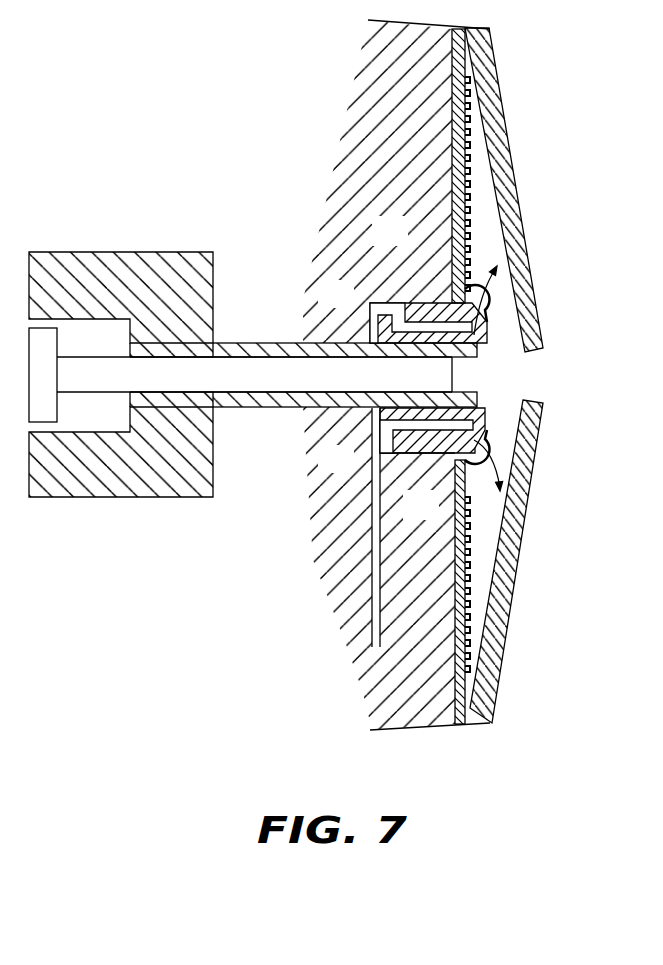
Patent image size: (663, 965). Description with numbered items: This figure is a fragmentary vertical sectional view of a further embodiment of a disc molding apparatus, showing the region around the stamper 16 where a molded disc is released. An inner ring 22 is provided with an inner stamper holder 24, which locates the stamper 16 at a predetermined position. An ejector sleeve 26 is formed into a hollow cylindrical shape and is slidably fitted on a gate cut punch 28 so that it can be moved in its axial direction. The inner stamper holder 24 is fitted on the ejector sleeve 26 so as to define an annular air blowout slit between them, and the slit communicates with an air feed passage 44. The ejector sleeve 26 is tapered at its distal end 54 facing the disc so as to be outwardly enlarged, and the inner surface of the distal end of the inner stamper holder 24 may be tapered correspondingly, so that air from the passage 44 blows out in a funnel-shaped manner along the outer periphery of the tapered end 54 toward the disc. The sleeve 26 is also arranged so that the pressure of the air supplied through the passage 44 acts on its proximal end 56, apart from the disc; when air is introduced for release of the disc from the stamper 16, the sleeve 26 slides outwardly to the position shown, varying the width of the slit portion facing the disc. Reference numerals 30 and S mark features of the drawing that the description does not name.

The stamper 16 is at (478, 173).
The inner ring 22 is at (405, 279).
The inner stamper holder 24 is at (470, 289).
The ejector sleeve 26 is at (253, 391).
The gate cut punch 28 is at (258, 409).
The upper plate 30 is at (268, 372).
The air feed passage 44 is at (372, 558).
The distal end of ejector sleeve 54 is at (489, 327).
The proximal end of ejector sleeve 56 is at (370, 305).
The gap S is at (480, 360).